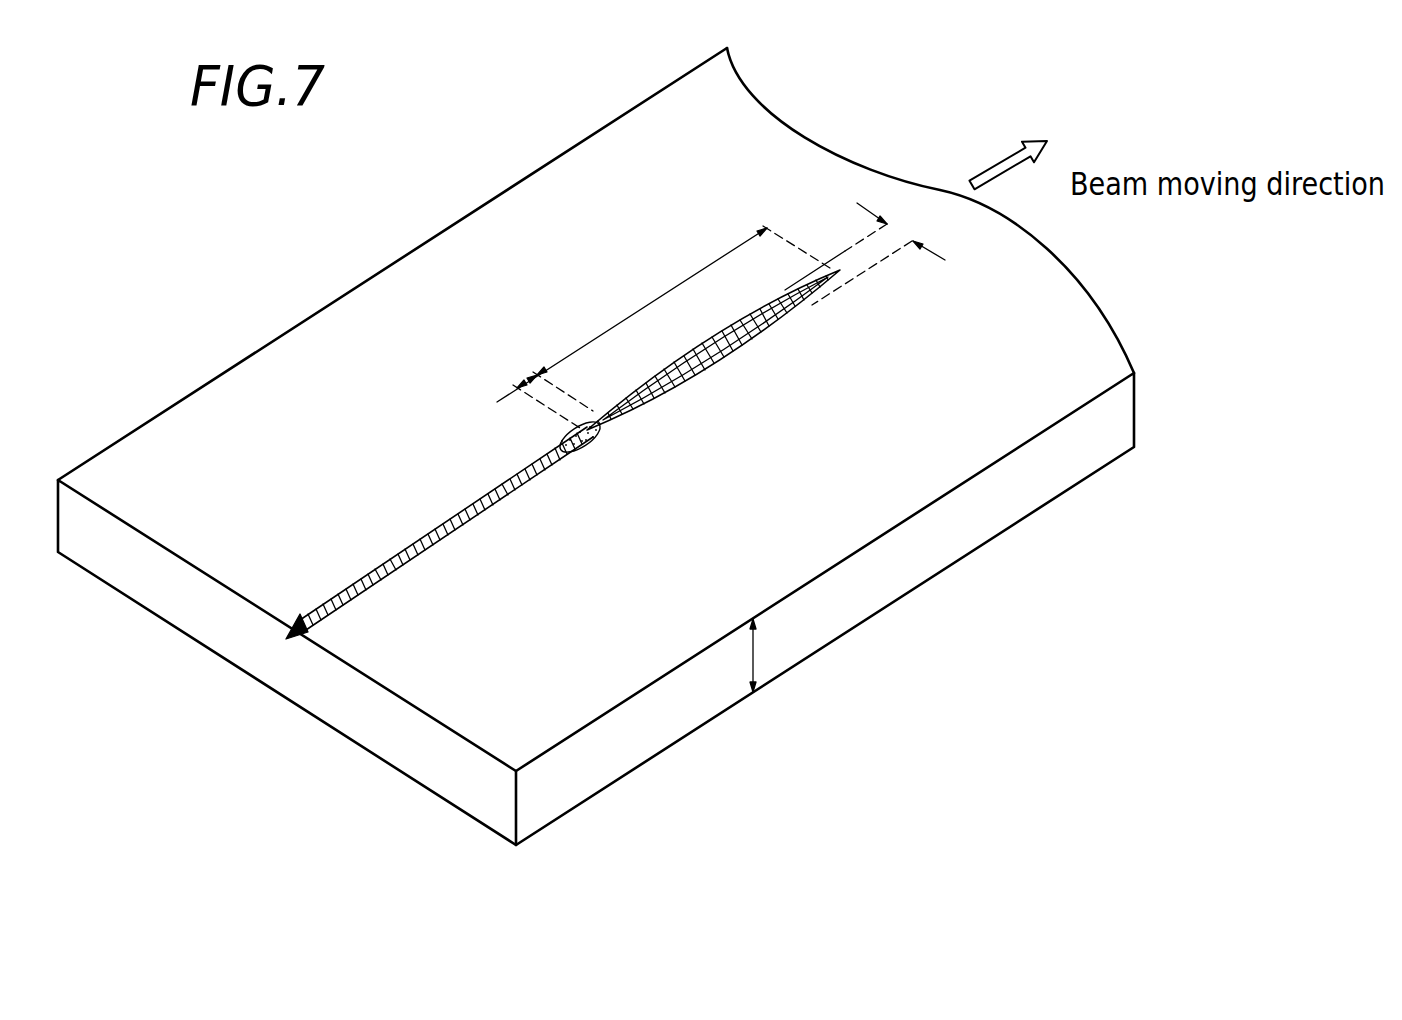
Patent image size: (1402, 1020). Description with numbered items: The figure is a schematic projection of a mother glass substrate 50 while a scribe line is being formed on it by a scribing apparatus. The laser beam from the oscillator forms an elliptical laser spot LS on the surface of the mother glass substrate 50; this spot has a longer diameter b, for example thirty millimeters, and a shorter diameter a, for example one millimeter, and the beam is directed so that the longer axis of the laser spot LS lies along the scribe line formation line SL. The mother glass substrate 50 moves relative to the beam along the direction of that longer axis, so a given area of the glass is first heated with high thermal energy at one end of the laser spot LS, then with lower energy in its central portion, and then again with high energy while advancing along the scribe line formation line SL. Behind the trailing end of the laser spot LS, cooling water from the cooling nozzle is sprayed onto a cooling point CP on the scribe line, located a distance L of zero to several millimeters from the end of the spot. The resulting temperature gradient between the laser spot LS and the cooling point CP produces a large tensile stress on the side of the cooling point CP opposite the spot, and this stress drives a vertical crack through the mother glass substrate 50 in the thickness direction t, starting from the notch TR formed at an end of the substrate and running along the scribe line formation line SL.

The mother glass substrate 50 is at (405, 284).
The notch TR is at (292, 620).
The cooling point CP is at (572, 430).
The laser spot LS is at (731, 355).
The scribe line formation line SL is at (848, 262).
The shorter diameter a is at (901, 231).
The longer diameter b is at (663, 318).
The distance L is at (532, 380).
The thickness direction t is at (744, 655).